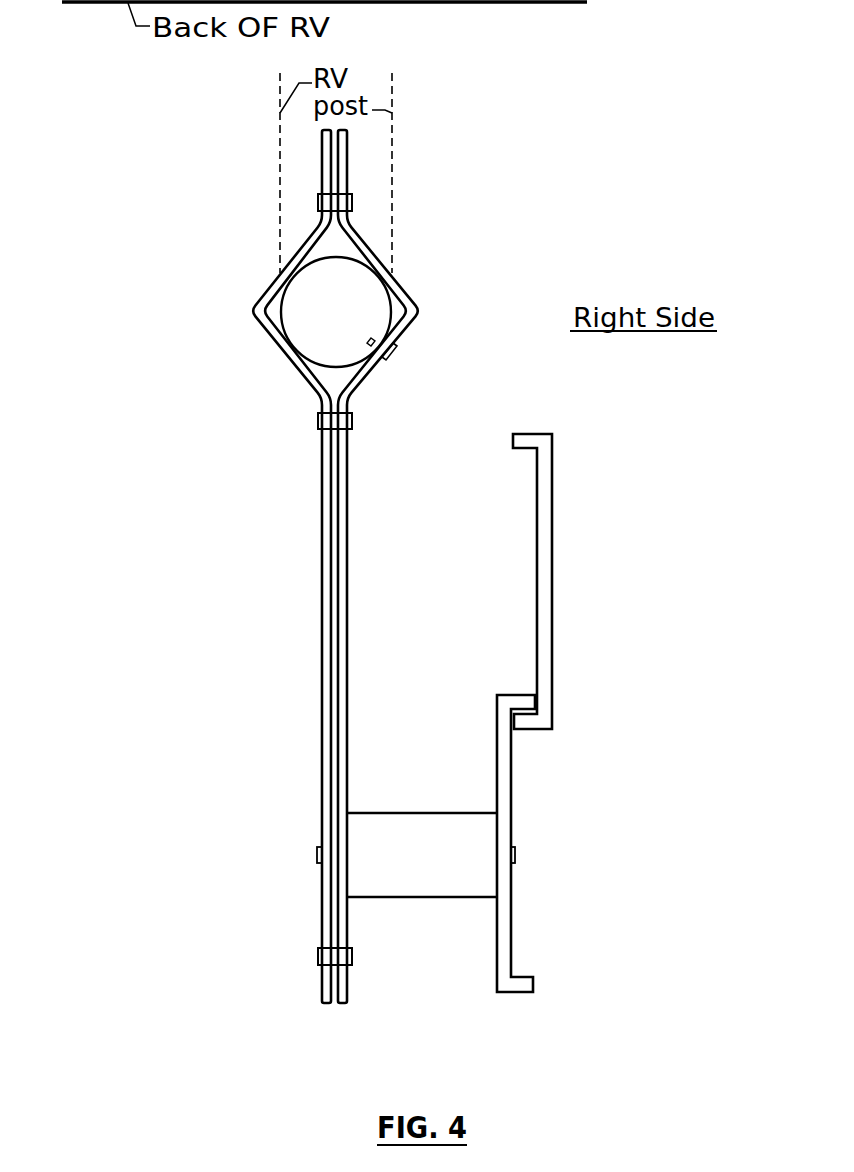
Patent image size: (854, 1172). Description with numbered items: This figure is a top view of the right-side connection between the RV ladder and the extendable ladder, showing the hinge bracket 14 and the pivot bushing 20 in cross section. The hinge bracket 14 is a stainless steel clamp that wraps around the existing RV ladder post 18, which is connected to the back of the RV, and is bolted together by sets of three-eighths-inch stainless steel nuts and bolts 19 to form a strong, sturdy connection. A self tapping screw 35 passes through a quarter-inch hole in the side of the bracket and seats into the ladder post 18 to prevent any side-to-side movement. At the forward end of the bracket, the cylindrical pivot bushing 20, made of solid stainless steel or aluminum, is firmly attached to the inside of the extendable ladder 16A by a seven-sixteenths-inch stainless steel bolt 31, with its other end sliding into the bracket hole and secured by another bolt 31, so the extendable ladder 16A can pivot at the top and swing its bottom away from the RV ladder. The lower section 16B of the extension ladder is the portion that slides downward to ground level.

The hinge bracket 14 is at (322, 592).
The RV ladder post 18 is at (316, 337).
The stainless steel nuts and bolts 19 is at (319, 201).
The self tapping screw 35 is at (393, 352).
The extendable ladder 16A is at (511, 788).
The extension ladder section 16B is at (553, 482).
The pivot bushing 20 is at (373, 897).
The stainless steel bolt 31 is at (318, 848).